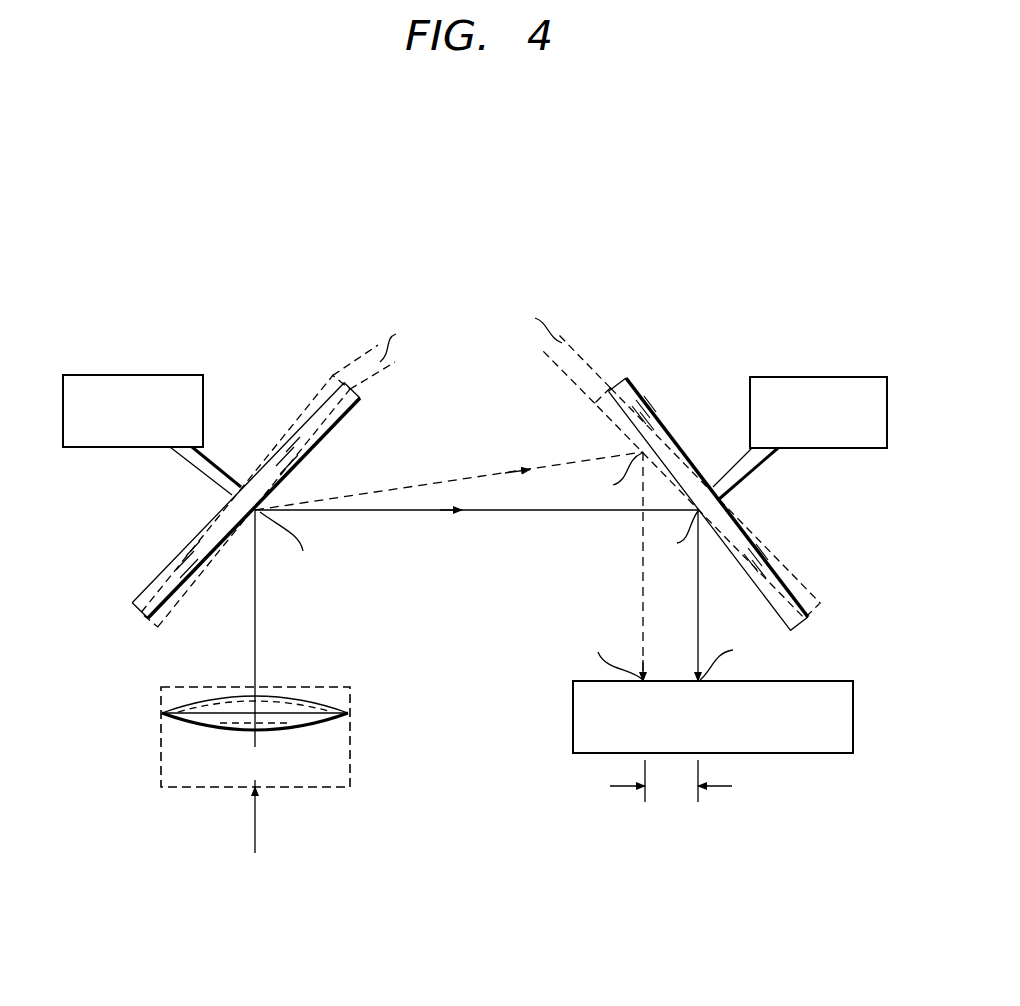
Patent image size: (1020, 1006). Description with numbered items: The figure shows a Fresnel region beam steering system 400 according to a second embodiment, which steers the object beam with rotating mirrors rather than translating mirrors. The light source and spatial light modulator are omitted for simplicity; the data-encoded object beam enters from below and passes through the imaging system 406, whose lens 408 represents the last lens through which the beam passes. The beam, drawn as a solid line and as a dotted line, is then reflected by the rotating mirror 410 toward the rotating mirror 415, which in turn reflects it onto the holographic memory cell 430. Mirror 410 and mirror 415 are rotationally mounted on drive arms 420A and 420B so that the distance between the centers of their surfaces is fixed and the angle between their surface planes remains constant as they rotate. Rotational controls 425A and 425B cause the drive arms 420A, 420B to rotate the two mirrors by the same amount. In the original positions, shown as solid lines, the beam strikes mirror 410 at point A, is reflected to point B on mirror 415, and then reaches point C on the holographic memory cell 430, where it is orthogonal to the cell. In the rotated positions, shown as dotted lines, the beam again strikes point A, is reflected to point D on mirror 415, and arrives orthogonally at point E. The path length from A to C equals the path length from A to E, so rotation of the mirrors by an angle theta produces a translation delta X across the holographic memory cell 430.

The Fresnel region beam steering system 400 is at (470, 252).
The imaging system 406 is at (161, 760).
The lens 408 is at (162, 712).
The rotating mirror 410 is at (322, 380).
The rotating mirror 415 is at (627, 380).
The drive arm 420A is at (207, 478).
The drive arm 420B is at (732, 472).
The rotational control 425A is at (107, 376).
The rotational control 425B is at (793, 377).
The holographic memory cell 430 is at (853, 715).